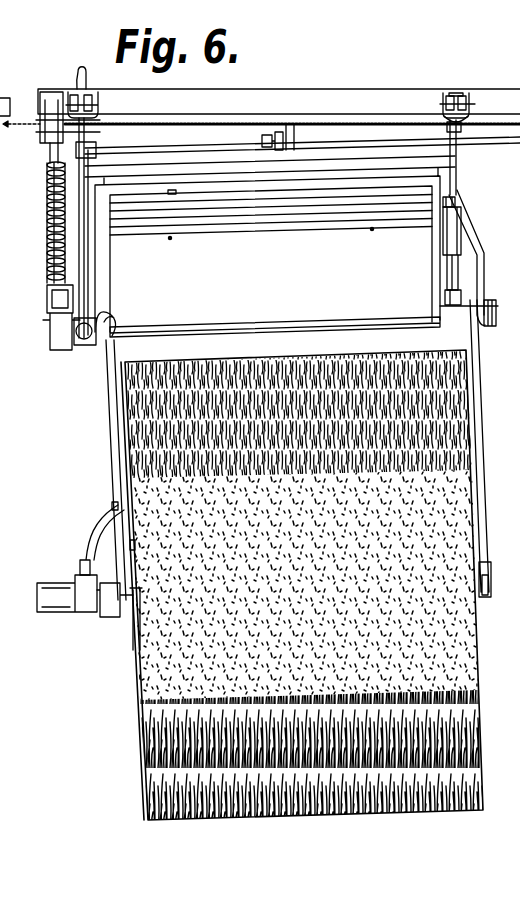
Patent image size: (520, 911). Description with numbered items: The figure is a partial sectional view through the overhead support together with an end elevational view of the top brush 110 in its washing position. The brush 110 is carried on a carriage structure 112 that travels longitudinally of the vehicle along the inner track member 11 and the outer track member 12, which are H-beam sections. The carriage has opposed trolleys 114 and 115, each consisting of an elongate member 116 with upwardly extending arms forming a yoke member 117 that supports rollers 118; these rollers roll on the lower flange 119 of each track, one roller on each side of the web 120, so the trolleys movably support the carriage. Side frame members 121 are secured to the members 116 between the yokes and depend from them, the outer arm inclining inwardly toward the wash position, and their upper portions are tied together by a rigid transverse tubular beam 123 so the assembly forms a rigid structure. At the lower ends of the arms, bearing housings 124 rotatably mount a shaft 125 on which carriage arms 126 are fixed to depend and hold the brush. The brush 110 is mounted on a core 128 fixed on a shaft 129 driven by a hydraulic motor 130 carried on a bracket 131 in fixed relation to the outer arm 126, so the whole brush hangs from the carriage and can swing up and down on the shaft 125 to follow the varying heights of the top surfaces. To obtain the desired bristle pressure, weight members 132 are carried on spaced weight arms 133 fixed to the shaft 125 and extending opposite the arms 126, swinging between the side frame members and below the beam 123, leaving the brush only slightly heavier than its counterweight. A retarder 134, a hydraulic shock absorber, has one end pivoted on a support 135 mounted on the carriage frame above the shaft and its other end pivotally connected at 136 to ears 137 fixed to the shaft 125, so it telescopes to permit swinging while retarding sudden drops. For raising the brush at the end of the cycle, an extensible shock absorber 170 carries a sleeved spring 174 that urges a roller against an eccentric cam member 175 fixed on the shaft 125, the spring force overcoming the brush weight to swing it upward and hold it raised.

The inner track member 11 is at (83, 92).
The outer track member 12 is at (452, 96).
The top brush 110 is at (423, 806).
The carriage structure 112 is at (454, 154).
The trolley 114 is at (449, 96).
The trolley 115 is at (64, 93).
The elongate member 116 is at (443, 127).
The yoke member 117 is at (462, 117).
The roller 118 is at (458, 102).
The lower flange 119 is at (459, 130).
The web 120 is at (447, 93).
The side frame member 121 is at (81, 248).
The tubular beam 123 is at (317, 148).
The bearing housing 124 is at (90, 352).
The shaft 125 is at (275, 321).
The carriage arm 126 is at (112, 478).
The core 128 is at (139, 649).
The shaft 129 is at (135, 608).
The motor 130 is at (52, 614).
The bracket 131 is at (86, 555).
The weight member 132 is at (235, 228).
The weight arm 133 is at (111, 270).
The retarder 134 is at (461, 260).
The support 135 is at (457, 202).
The pivotal connection 136 is at (448, 296).
The ear 137 is at (450, 306).
The shock absorber 170 is at (45, 173).
The spring 174 is at (60, 235).
The eccentric cam member 175 is at (64, 358).